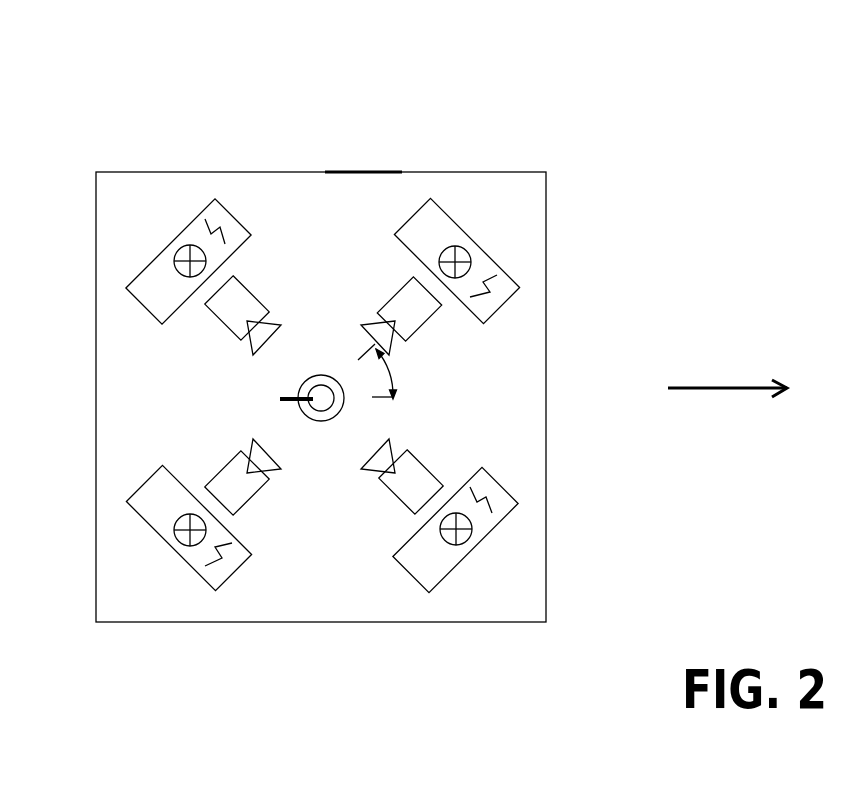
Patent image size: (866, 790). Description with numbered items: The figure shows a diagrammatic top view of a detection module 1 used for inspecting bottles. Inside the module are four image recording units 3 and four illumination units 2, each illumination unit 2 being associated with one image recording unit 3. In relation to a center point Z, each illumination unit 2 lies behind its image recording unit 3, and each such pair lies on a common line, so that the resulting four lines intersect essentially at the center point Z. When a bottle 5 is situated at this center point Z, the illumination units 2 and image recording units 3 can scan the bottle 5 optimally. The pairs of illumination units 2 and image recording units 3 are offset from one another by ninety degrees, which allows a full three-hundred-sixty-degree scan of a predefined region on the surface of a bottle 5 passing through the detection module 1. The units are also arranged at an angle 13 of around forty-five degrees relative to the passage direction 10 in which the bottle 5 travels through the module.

The detection module 1 is at (110, 170).
The illumination unit 2 is at (212, 197).
The image recording unit 3 is at (324, 396).
The bottle 5 is at (320, 374).
The passage direction 10 is at (740, 388).
The angle 13 is at (400, 365).